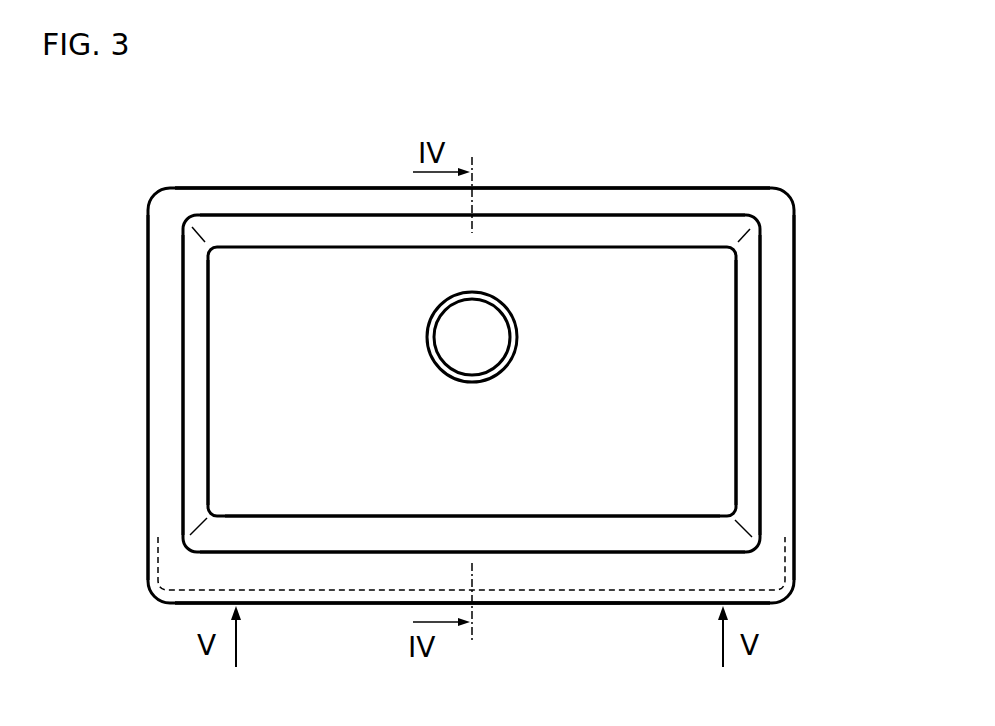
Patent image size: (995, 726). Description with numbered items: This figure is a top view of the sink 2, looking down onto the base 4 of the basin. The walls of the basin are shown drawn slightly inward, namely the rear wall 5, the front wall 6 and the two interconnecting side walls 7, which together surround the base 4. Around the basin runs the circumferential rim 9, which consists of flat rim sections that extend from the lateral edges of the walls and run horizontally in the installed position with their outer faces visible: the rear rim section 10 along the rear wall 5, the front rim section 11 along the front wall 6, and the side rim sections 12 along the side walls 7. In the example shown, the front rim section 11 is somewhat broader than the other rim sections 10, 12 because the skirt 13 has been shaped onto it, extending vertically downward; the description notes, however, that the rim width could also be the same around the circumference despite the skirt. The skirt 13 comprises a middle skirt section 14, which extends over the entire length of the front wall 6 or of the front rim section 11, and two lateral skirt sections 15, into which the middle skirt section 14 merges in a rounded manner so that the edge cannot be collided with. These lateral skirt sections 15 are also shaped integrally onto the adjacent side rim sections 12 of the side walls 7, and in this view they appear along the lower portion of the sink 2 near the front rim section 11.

The sink 2 is at (806, 160).
The base 4 is at (683, 317).
The rear wall 5 is at (551, 237).
The front wall 6 is at (562, 533).
The side walls 7 is at (194, 374).
The rim 9 is at (232, 174).
The rear rim section 10 is at (312, 188).
The front rim section 11 is at (292, 571).
The side rim sections 12 is at (162, 296).
The skirt 13 is at (654, 619).
The middle skirt section 14 is at (517, 603).
The lateral skirt sections 15 is at (148, 553).